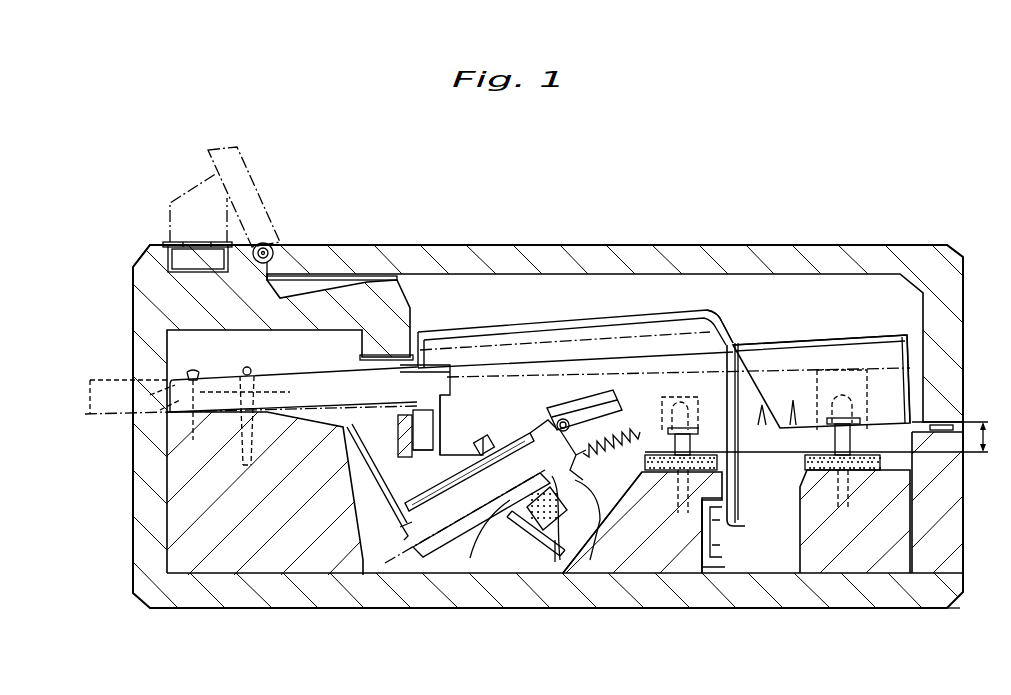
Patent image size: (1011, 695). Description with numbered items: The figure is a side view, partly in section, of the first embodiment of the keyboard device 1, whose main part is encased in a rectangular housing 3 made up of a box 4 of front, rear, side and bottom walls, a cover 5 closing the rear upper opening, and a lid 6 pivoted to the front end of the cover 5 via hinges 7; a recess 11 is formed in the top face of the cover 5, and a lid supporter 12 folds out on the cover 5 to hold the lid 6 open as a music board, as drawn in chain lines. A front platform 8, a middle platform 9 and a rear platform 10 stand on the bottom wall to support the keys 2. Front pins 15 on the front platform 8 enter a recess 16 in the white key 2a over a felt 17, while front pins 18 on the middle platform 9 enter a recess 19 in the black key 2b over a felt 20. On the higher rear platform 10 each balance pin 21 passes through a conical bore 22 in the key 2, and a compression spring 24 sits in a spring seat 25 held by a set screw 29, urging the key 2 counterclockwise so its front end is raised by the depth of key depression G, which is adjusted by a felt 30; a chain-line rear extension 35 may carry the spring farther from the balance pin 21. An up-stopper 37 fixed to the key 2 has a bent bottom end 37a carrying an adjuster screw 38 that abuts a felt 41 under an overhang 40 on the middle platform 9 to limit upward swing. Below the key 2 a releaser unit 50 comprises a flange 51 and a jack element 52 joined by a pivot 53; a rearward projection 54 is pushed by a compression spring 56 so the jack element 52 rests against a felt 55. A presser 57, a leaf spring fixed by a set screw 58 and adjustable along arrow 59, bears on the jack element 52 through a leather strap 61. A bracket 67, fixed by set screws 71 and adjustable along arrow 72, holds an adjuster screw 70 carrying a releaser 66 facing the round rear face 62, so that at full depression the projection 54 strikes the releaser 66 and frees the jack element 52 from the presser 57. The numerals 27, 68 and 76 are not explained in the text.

The keyboard device 1 is at (363, 198).
The key 2 is at (813, 330).
The white key 2a is at (783, 340).
The black key 2b is at (712, 318).
The housing 3 is at (893, 609).
The box 4 is at (937, 608).
The cover 5 is at (144, 278).
The lid 6 is at (893, 254).
The hinges 7 is at (278, 247).
The front platform 8 is at (818, 560).
The middle platform 9 is at (652, 560).
The rear platform 10 is at (262, 553).
The recess 11 is at (352, 274).
The lid supporter 12 is at (198, 243).
The front pins 15 is at (950, 462).
The recess 16 is at (905, 390).
The felt 17 is at (913, 482).
The front pins 18 is at (735, 440).
The recess 19 is at (676, 356).
The felt 20 is at (740, 470).
The balance pin 21 is at (248, 368).
The conical bore 22 is at (260, 393).
The compression spring 24 is at (160, 410).
The spring seat 25 is at (150, 395).
The stopper 27 is at (358, 357).
The set screw 29 is at (190, 368).
The felt 30 is at (168, 415).
The rear extension 35 is at (100, 380).
The up-stopper 37 is at (745, 457).
The bottom end 37a is at (725, 545).
The adjuster screw 38 is at (692, 572).
The overhang 40 is at (745, 502).
The felt 41 is at (625, 562).
The releaser unit 50 is at (459, 547).
The flange 51 is at (585, 390).
The jack element 52 is at (490, 410).
The pivot 53 is at (540, 400).
The rearward projection 54 is at (575, 463).
The felt 55 is at (480, 444).
The compression spring 56 is at (525, 400).
The presser 57 is at (382, 512).
The set screw 58 is at (398, 440).
The arrow 59 is at (400, 455).
The leather strap 61 is at (400, 557).
The round rear face 62 is at (467, 516).
The releaser 66 is at (500, 560).
The bracket 67 is at (540, 547).
The spring 68 is at (636, 428).
The adjuster screw 70 is at (518, 540).
The set screws 71 is at (555, 556).
The arrow 72 is at (620, 387).
The post 76 is at (441, 410).
The depth of key depression G is at (992, 437).